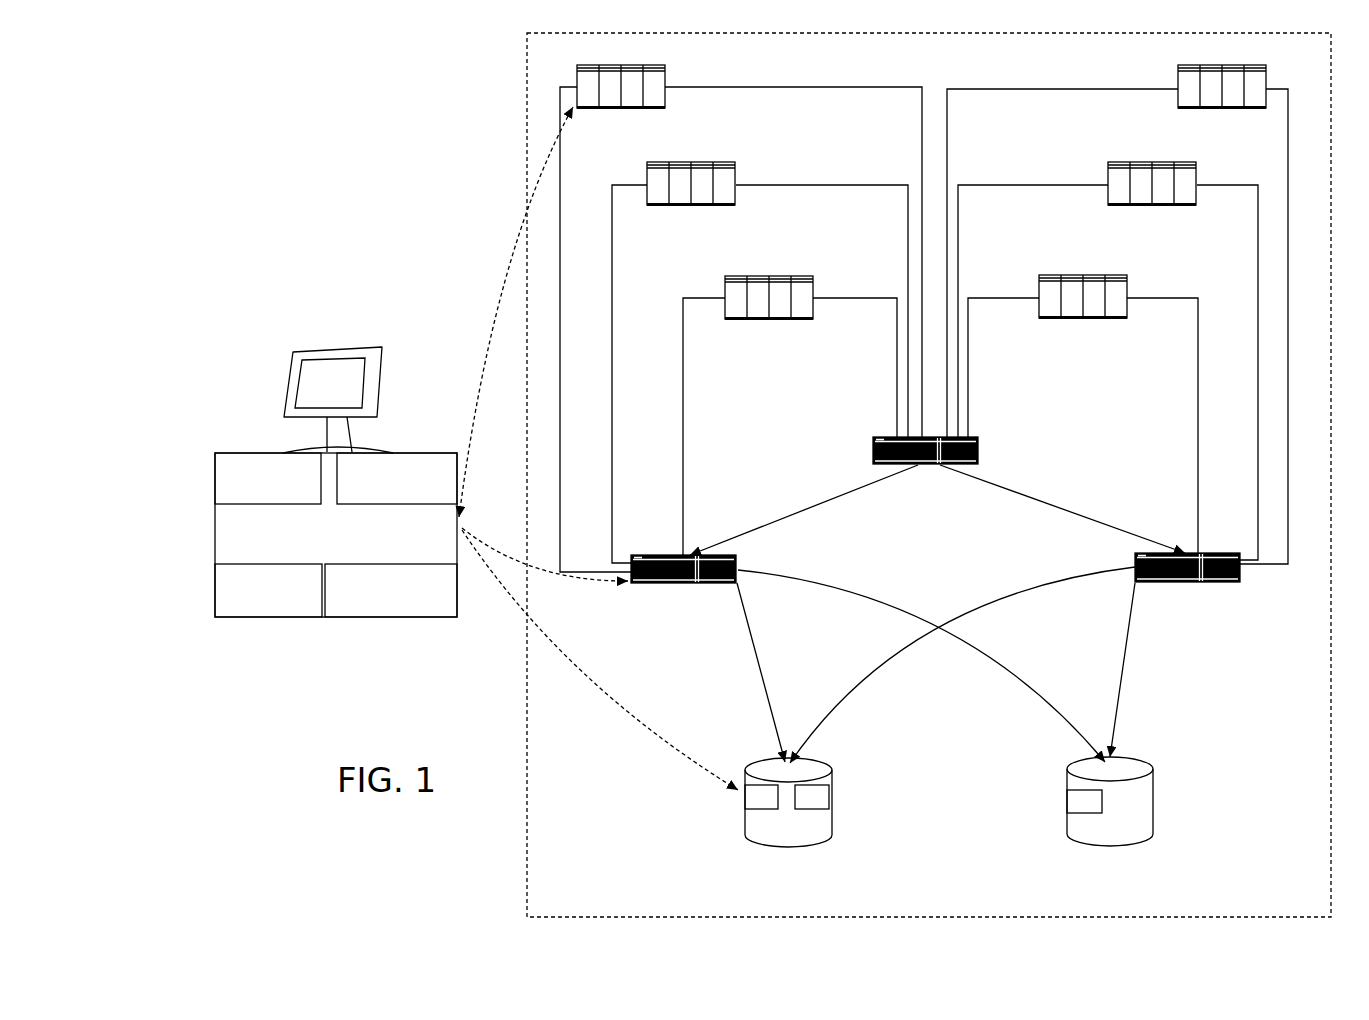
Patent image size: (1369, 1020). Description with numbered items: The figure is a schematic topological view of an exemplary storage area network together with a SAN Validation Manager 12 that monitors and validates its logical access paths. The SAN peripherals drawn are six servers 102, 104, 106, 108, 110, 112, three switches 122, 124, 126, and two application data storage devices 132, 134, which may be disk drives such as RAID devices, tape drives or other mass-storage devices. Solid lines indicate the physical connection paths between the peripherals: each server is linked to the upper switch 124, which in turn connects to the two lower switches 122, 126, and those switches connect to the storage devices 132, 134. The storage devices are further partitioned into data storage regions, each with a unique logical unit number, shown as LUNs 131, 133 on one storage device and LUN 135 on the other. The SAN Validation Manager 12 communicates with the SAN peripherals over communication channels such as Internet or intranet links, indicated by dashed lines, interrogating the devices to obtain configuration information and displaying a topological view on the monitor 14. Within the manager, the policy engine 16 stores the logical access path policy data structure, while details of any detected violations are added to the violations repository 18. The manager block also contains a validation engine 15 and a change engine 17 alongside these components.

The SAN Validation Manager 12 is at (215, 533).
The monitor 14 is at (323, 348).
The validation engine 15 is at (247, 455).
The policy engine 16 is at (267, 617).
The change engine 17 is at (383, 617).
The violations repository 18 is at (398, 453).
The server 102 is at (668, 103).
The server 104 is at (1053, 323).
The server 106 is at (738, 202).
The server 108 is at (813, 318).
The server 110 is at (1170, 107).
The server 112 is at (1105, 197).
The switch 122 is at (655, 580).
The switch 124 is at (898, 467).
The switch 126 is at (1219, 582).
The LUN 131 is at (758, 796).
The storage device 132 is at (784, 822).
The LUN 133 is at (820, 796).
The storage device 134 is at (1109, 823).
The LUN 135 is at (1067, 807).